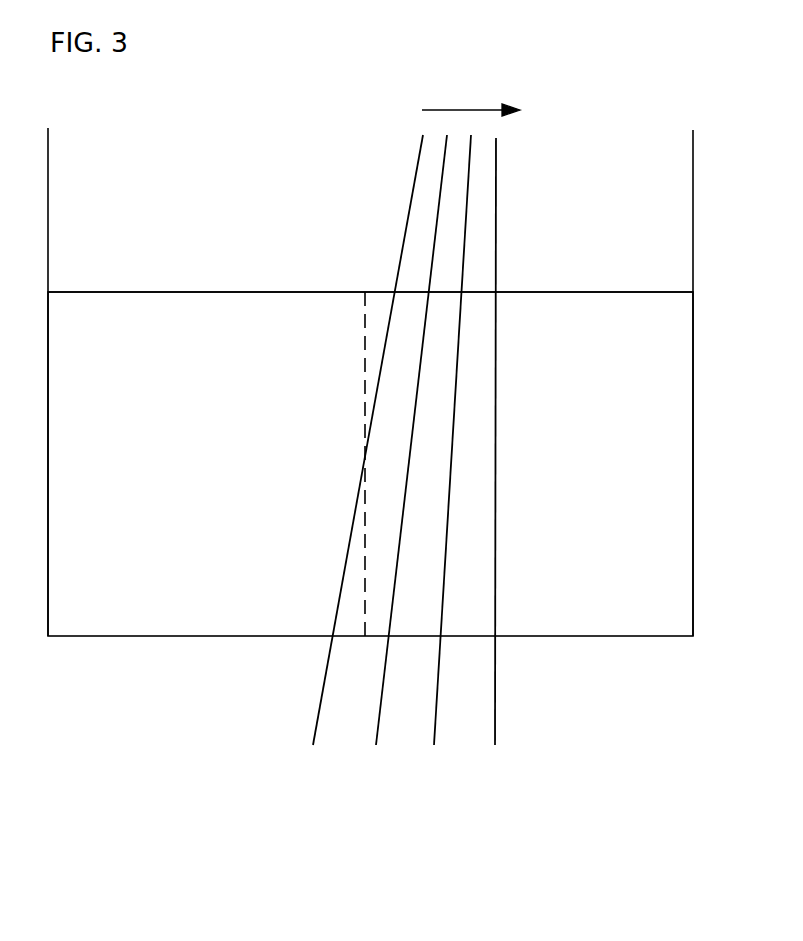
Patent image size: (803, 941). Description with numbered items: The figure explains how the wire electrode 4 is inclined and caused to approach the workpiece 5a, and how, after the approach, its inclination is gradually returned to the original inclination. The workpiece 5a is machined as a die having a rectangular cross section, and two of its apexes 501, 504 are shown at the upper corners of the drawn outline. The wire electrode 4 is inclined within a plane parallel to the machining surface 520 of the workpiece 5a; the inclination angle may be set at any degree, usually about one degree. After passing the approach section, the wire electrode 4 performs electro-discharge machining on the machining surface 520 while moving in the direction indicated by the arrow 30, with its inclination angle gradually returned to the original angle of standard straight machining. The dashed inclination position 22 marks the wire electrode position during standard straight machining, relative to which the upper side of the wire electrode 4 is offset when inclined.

The apex 504 is at (48, 367).
The apex 501 is at (698, 367).
The machining surface 520 is at (570, 362).
The workpiece 5a is at (146, 292).
The inclination position 22 is at (364, 292).
The wire electrode 4 is at (412, 192).
The moving direction 30 is at (477, 110).